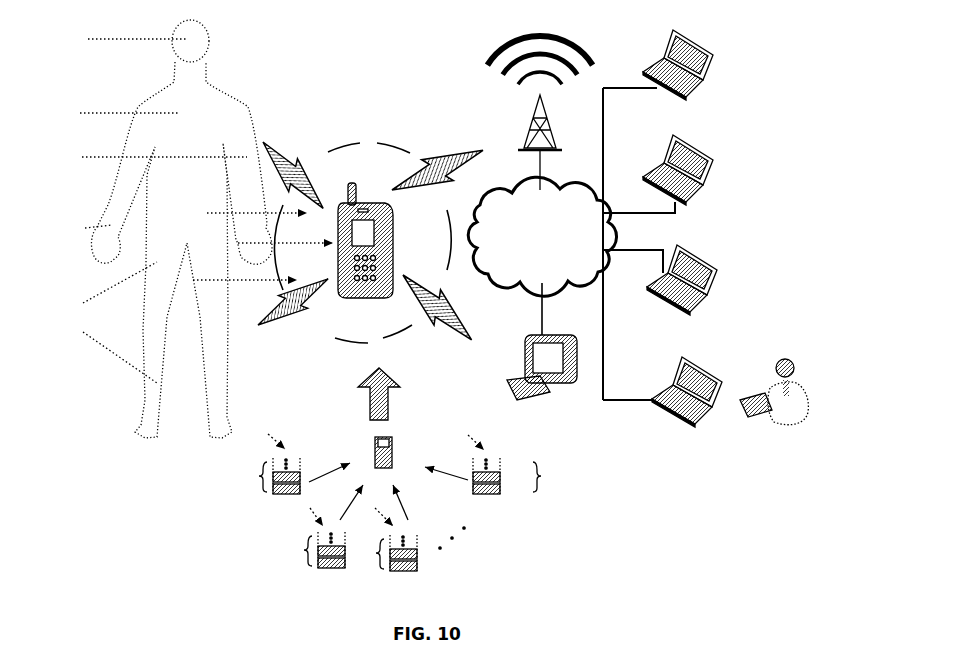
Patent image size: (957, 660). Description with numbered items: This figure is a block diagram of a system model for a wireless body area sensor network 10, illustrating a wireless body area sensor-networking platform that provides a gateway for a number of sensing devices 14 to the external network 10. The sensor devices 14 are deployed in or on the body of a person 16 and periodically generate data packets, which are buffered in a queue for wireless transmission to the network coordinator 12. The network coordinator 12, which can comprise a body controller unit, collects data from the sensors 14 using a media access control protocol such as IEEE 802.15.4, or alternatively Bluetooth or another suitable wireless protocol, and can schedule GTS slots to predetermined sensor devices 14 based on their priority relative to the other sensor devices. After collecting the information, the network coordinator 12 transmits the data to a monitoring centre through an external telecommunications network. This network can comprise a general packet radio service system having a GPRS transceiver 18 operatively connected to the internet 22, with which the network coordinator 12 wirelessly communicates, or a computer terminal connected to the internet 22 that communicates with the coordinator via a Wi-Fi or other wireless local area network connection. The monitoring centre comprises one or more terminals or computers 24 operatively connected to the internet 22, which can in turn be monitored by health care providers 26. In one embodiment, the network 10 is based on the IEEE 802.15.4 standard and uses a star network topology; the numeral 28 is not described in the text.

The wireless body area sensor network 10 is at (766, 40).
The network coordinator 12 is at (343, 302).
The sensing devices 14 is at (57, 333).
The person 16 is at (212, 44).
The GPRS transceiver 18 is at (492, 51).
The internet 22 is at (553, 186).
The terminals or computers 24 is at (768, 260).
The health care providers 26 is at (571, 389).
The physician 28 is at (772, 458).